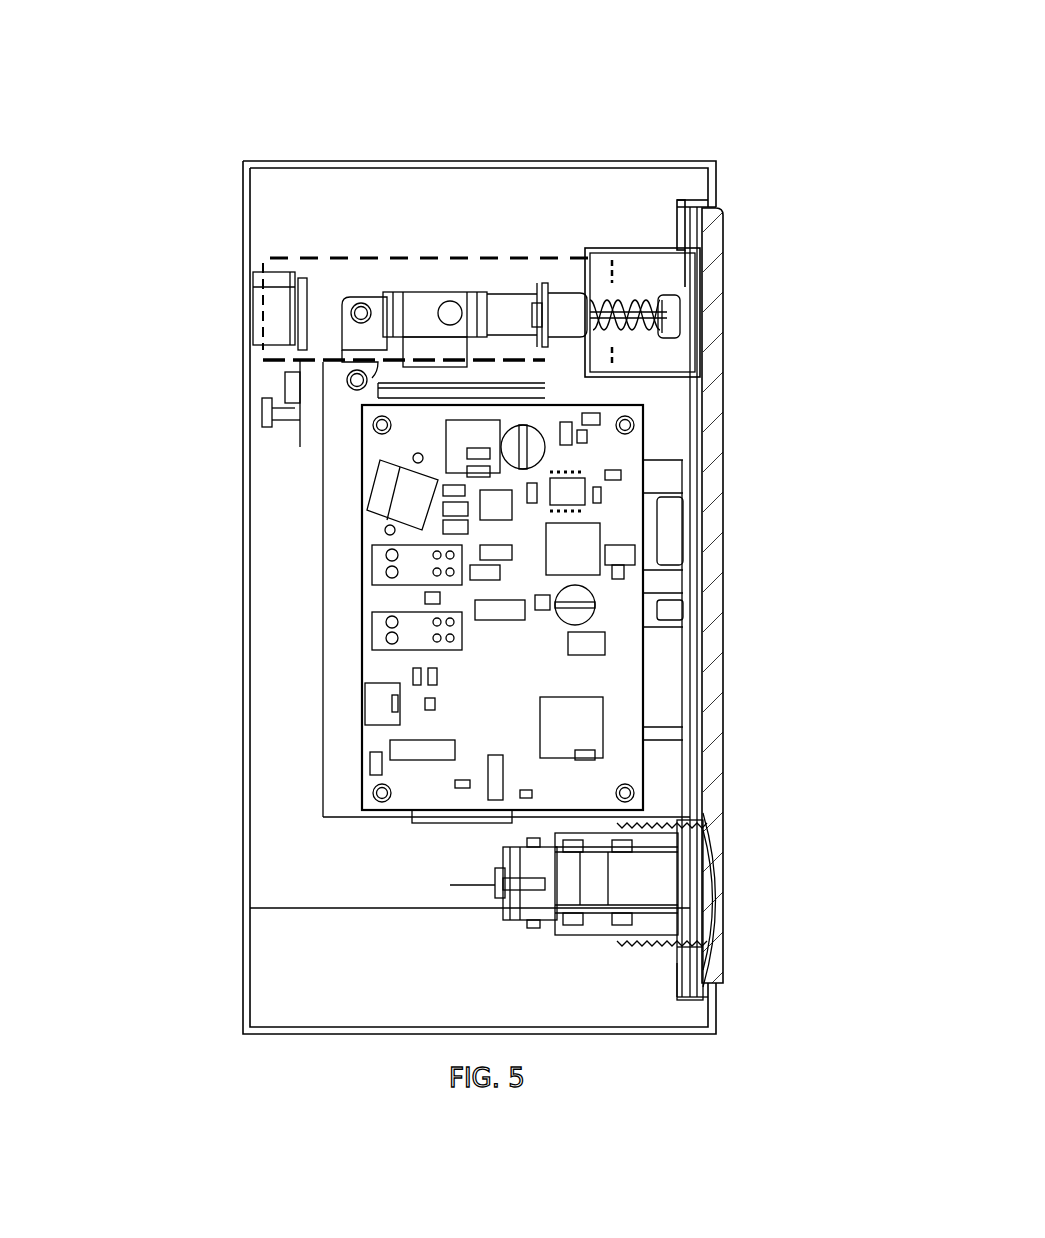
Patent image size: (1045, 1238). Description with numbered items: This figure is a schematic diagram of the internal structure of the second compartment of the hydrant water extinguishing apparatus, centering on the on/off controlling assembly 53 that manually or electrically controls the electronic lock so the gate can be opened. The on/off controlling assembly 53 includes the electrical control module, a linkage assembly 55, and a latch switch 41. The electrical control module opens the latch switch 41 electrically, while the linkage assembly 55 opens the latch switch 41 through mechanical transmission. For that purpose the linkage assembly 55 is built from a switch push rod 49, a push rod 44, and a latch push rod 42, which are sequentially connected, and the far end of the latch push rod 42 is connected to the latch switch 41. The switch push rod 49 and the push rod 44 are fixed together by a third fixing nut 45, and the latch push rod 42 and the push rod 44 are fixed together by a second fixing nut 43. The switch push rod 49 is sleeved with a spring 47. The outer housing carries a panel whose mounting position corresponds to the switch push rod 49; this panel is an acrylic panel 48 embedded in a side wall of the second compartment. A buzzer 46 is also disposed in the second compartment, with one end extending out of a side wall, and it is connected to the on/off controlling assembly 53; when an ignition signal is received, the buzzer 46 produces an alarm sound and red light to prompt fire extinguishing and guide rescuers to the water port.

The latch switch 41 is at (169, 229).
The latch push rod 42 is at (406, 414).
The second fixing nut 43 is at (306, 201).
The push rod 44 is at (423, 189).
The third fixing nut 45 is at (493, 179).
The buzzer 46 is at (686, 861).
The spring 47 is at (637, 194).
The acrylic panel 48 is at (810, 547).
The switch push rod 49 is at (792, 266).
The on/off controlling assembly 53 is at (381, 614).
The linkage assembly 55 is at (433, 135).